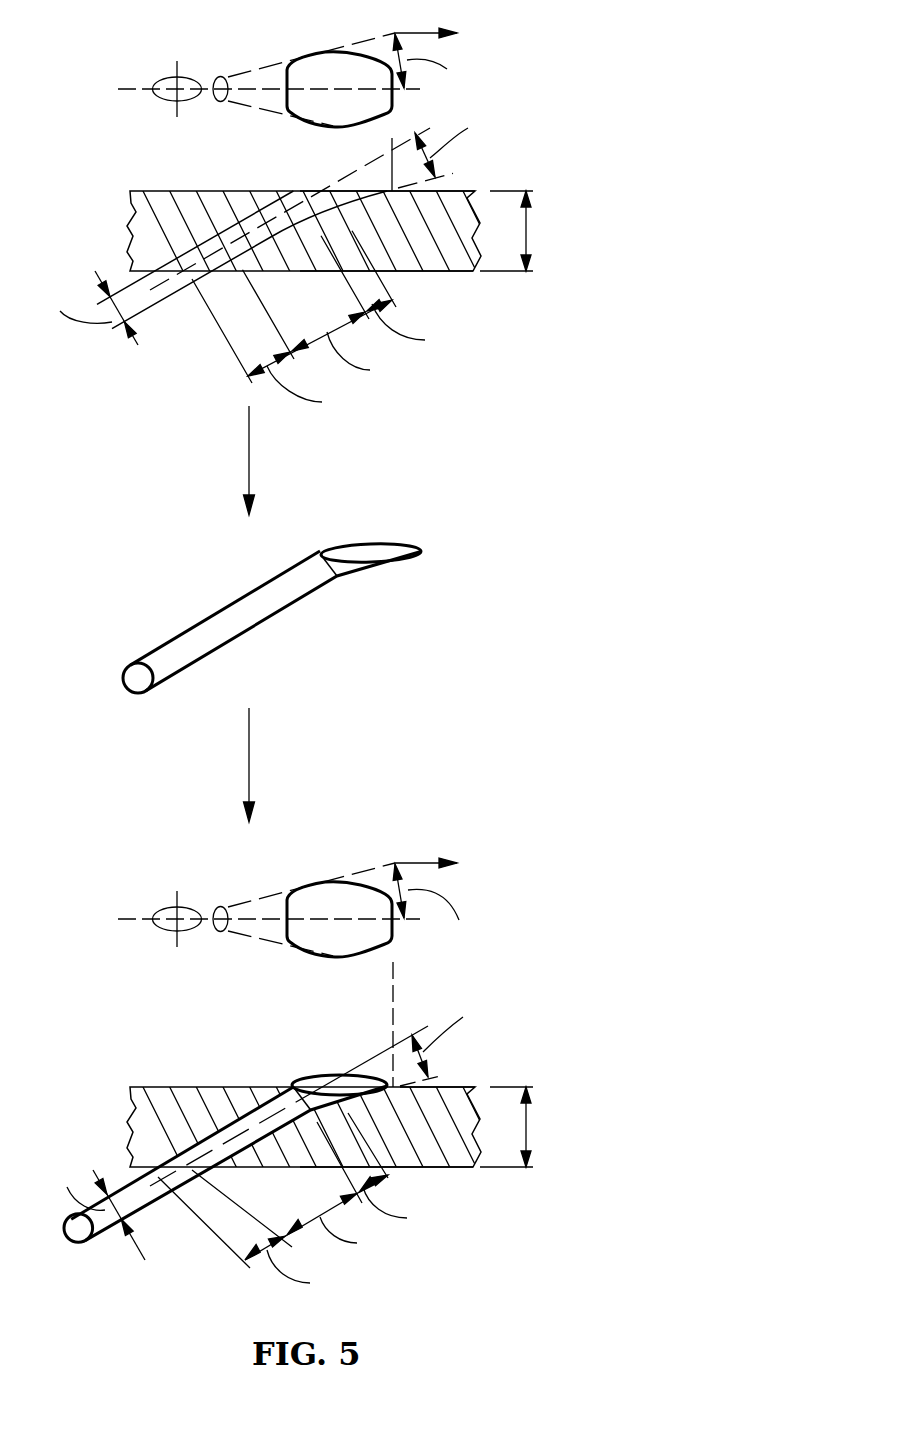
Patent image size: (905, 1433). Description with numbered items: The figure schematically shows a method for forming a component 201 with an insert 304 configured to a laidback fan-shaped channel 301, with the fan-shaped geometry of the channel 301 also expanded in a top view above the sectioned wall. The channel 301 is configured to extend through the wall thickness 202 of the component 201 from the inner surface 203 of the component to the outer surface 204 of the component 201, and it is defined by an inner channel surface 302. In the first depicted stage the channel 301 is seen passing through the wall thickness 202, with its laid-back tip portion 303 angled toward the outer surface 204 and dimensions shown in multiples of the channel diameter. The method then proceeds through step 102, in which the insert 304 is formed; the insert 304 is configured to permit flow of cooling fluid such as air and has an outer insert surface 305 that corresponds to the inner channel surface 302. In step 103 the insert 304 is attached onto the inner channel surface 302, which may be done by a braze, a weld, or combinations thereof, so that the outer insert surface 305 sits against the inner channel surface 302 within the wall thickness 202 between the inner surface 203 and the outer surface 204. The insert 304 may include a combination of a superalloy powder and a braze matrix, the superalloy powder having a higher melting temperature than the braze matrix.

The insert forming step 102 is at (248, 463).
The insert attaching step 103 is at (250, 752).
The component 201 is at (150, 225).
The wall thickness 202 is at (527, 230).
The inner surface 203 is at (448, 272).
The outer surface 204 is at (455, 191).
The channel 301 is at (267, 223).
The inner channel surface 302 is at (255, 77).
The bent tip of tube 303 is at (353, 190).
The insert 304 is at (433, 549).
The outer insert surface 305 is at (263, 620).